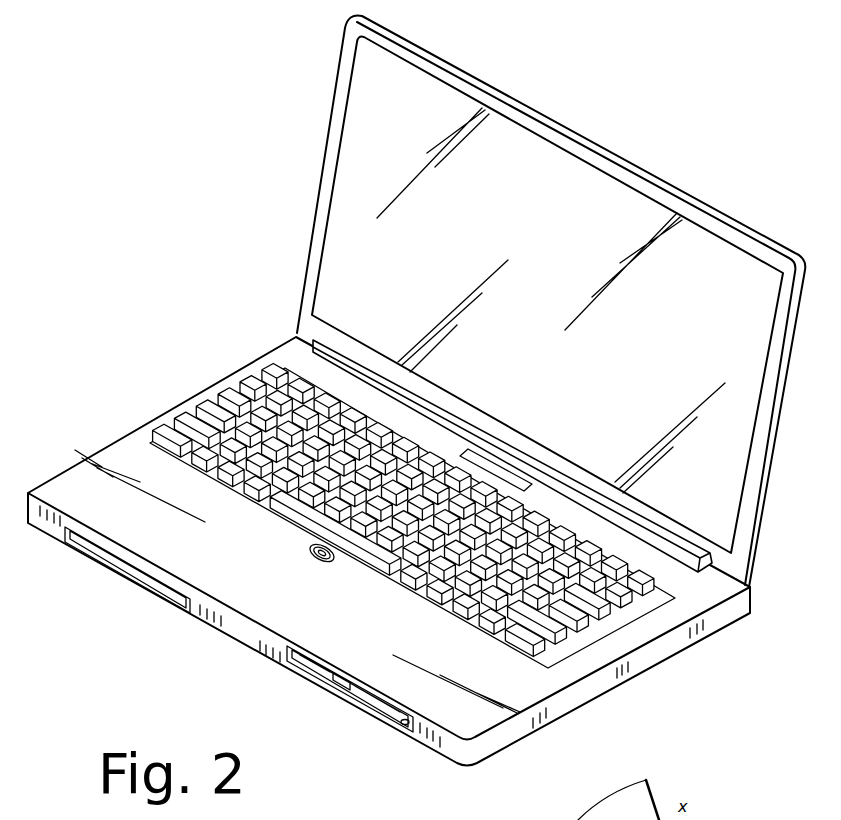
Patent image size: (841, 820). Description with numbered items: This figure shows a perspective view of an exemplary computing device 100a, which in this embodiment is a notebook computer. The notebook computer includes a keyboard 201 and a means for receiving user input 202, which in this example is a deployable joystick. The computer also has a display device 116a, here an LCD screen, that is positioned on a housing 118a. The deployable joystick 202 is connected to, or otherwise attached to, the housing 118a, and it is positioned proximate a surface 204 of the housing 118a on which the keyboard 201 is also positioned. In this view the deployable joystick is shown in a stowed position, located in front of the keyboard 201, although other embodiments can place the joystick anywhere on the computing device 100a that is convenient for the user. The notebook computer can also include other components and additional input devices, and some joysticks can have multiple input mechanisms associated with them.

The computing device 100a is at (416, 391).
The display device 116a is at (342, 260).
The housing 118a is at (270, 345).
The keyboard 201 is at (210, 407).
The means for receiving user input 202 is at (303, 559).
The surface 204 is at (164, 537).